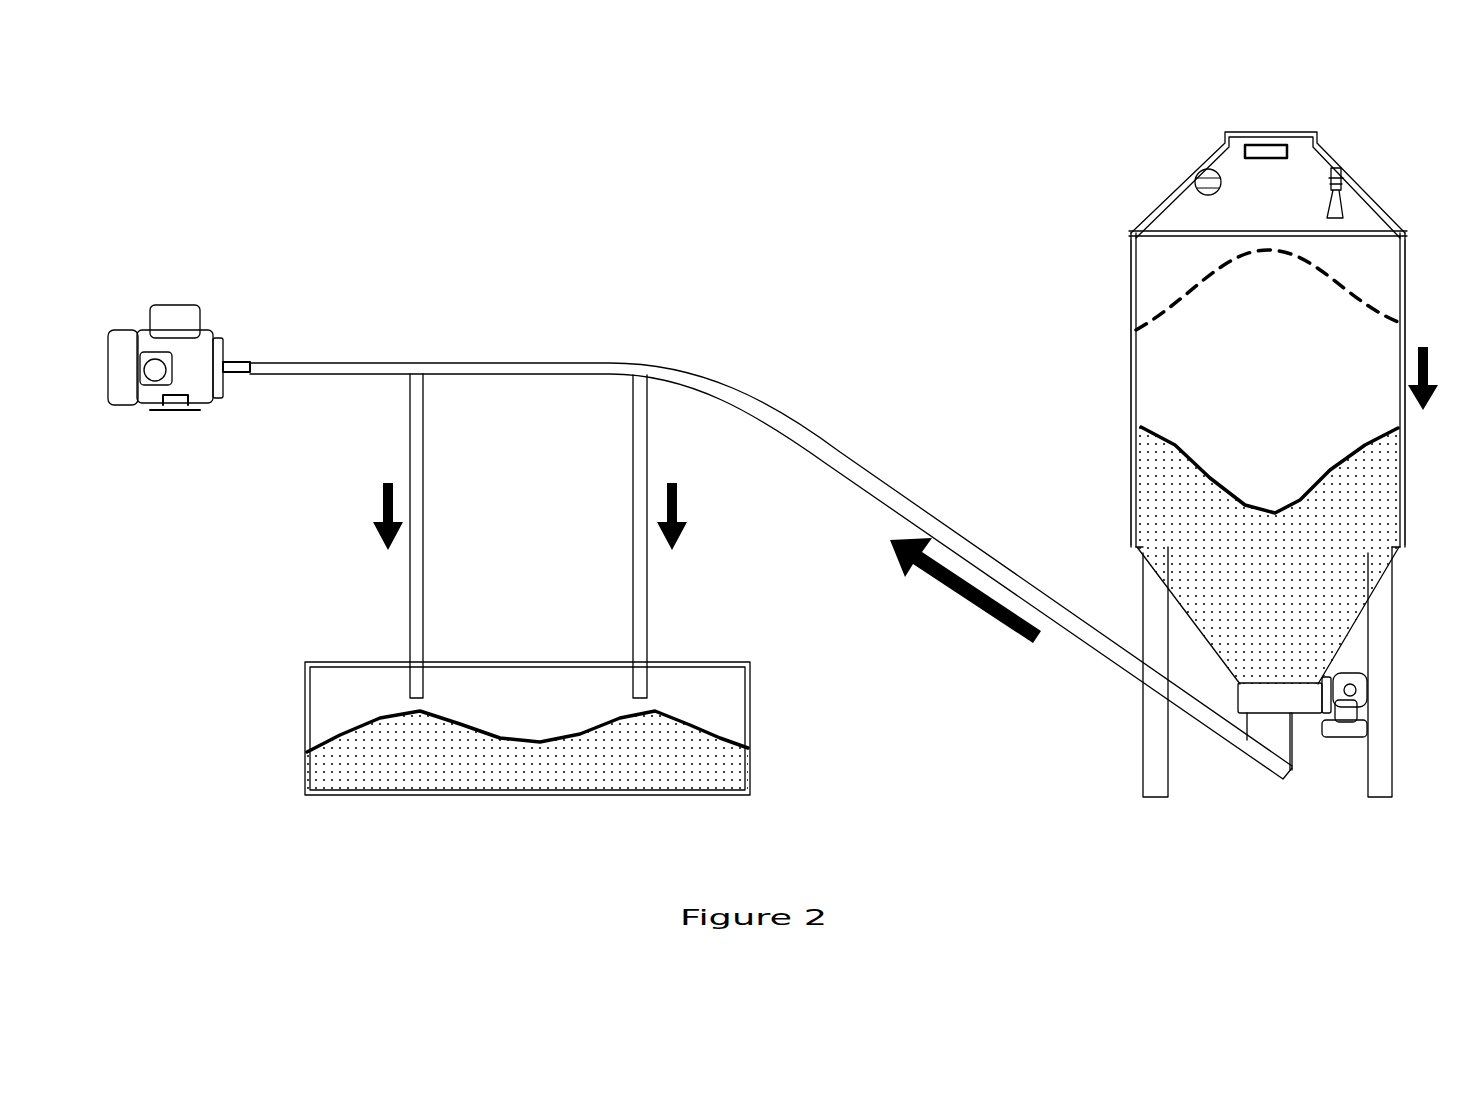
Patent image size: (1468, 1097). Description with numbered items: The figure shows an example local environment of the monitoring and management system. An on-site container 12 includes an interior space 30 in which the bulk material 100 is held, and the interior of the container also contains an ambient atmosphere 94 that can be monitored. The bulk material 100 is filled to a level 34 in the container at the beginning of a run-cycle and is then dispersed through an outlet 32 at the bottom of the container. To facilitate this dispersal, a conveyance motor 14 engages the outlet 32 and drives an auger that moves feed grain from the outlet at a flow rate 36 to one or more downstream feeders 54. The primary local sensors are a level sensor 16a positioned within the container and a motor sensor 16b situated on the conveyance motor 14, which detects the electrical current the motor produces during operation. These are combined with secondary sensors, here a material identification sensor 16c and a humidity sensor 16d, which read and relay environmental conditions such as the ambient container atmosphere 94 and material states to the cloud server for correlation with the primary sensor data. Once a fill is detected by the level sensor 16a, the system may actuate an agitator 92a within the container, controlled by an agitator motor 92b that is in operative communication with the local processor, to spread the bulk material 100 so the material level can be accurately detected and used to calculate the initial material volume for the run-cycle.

The on-site container 12 is at (1133, 230).
The conveyance motor 14 is at (128, 345).
The level sensor 16a is at (1336, 175).
The motor sensor 16b is at (180, 322).
The material identification sensor 16c is at (1207, 172).
The humidity sensor 16d is at (1267, 150).
The interior space 30 is at (1185, 400).
The outlet 32 is at (1275, 750).
The level 34 is at (1157, 308).
The flow rate 36 is at (963, 595).
The downstream feeder 54 is at (328, 683).
The agitator 92a is at (1288, 705).
The agitator motor 92b is at (1348, 693).
The ambient atmosphere 94 is at (1378, 270).
The bulk material 100 is at (1160, 475).